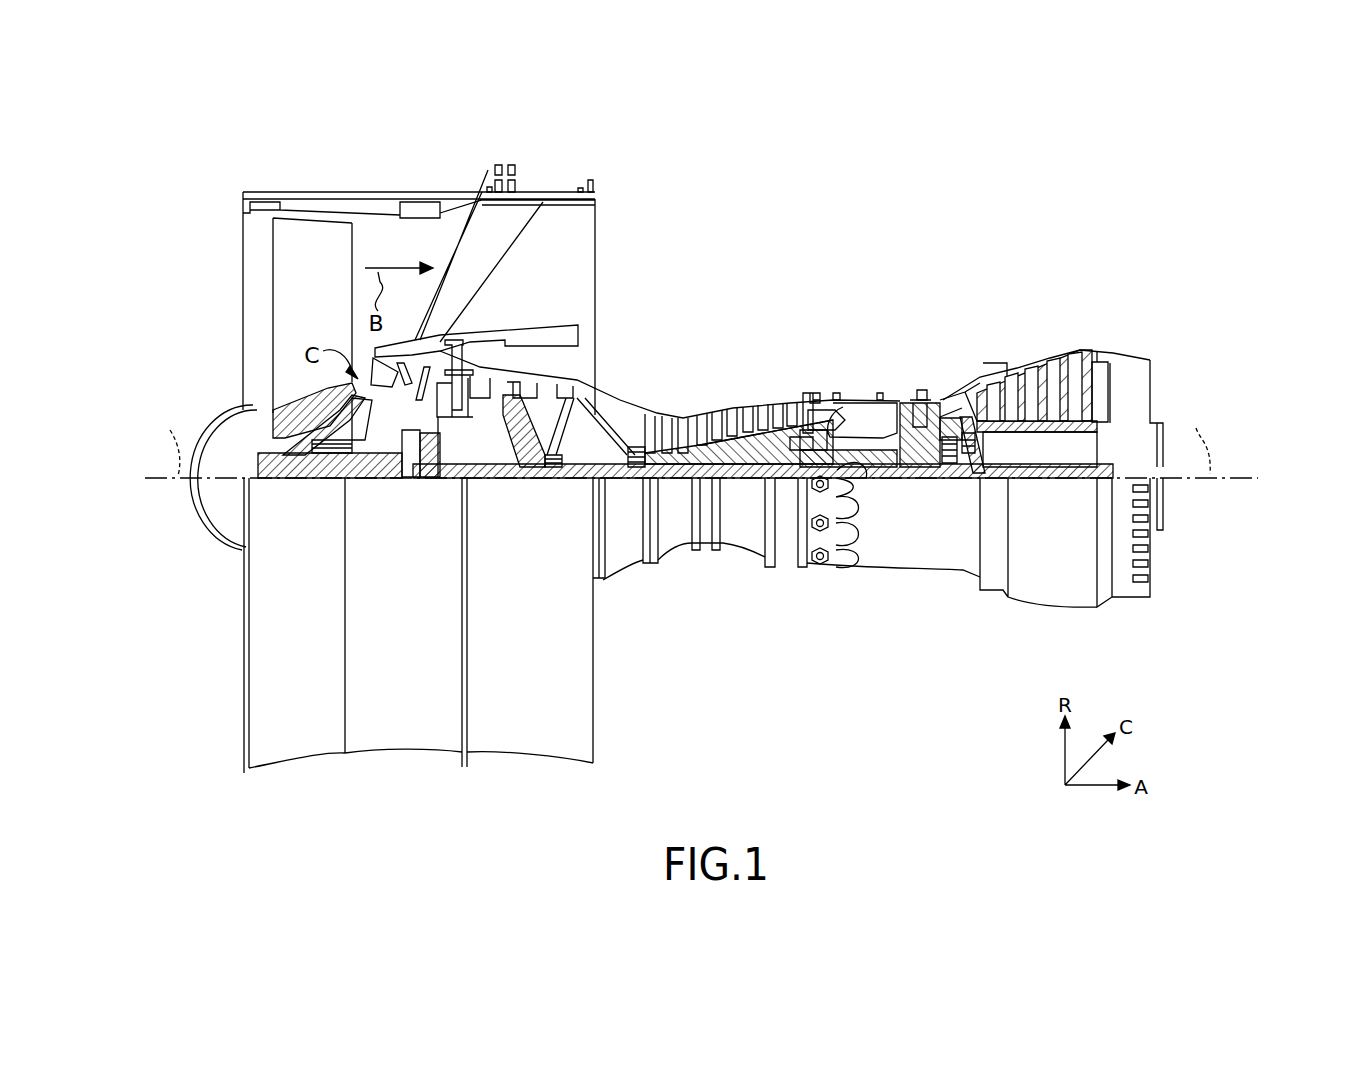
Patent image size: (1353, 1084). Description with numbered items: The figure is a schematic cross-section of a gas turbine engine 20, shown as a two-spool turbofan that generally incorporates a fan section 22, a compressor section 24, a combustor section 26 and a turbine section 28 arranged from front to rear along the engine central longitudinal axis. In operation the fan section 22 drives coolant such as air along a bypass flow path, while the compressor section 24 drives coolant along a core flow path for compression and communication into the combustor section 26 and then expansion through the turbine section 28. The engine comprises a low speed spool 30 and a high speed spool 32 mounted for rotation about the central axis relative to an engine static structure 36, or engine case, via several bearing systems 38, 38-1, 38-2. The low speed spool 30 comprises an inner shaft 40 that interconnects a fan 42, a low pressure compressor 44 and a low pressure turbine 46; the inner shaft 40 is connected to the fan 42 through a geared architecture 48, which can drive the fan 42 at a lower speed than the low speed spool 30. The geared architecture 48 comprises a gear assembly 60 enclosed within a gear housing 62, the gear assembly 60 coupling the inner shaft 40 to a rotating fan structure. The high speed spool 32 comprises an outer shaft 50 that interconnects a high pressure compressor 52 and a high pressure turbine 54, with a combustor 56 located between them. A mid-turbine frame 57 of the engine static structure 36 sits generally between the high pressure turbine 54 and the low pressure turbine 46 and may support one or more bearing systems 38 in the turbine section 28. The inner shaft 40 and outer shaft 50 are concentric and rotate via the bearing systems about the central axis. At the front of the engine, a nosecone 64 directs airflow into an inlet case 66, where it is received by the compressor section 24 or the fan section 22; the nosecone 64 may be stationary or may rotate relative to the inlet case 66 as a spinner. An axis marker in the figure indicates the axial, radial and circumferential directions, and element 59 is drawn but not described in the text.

The gas turbine engine 20 is at (894, 183).
The fan section 22 is at (441, 176).
The compressor section 24 is at (467, 296).
The combustor section 26 is at (905, 296).
The turbine section 28 is at (1097, 296).
The low speed spool 30 is at (749, 492).
The high speed spool 32 is at (793, 437).
The engine static structure 36 is at (400, 740).
The bearing system 38 is at (962, 478).
The bearing system 38-1 is at (322, 455).
The bearing system 38-2 is at (547, 480).
The inner shaft 40 is at (613, 478).
The fan 42 is at (313, 319).
The low pressure compressor 44 is at (533, 385).
The low pressure turbine 46 is at (1043, 353).
The geared architecture 48 is at (418, 512).
The outer shaft 50 is at (840, 478).
The high pressure compressor 52 is at (753, 447).
The high pressure turbine 54 is at (918, 400).
The combustor 56 is at (860, 413).
The mid-turbine frame 57 is at (963, 385).
The turbine vanes 59 is at (972, 392).
The gear assembly 60 is at (440, 440).
The gear housing 62 is at (440, 420).
The nosecone 64 is at (212, 430).
The inlet case 66 is at (488, 170).